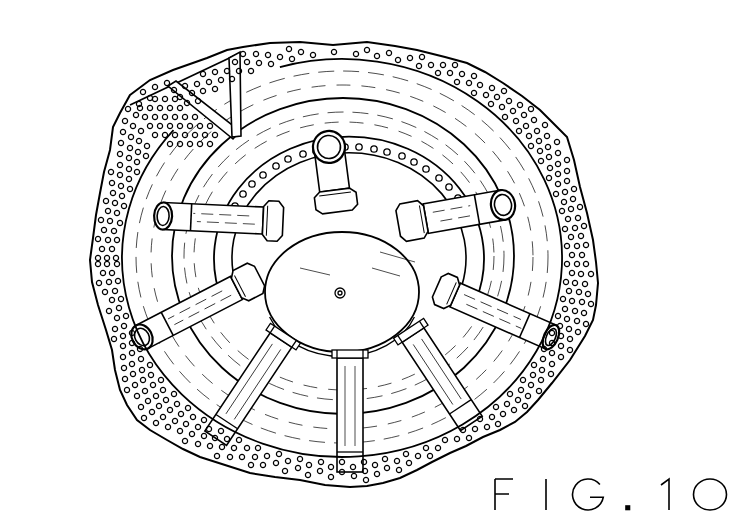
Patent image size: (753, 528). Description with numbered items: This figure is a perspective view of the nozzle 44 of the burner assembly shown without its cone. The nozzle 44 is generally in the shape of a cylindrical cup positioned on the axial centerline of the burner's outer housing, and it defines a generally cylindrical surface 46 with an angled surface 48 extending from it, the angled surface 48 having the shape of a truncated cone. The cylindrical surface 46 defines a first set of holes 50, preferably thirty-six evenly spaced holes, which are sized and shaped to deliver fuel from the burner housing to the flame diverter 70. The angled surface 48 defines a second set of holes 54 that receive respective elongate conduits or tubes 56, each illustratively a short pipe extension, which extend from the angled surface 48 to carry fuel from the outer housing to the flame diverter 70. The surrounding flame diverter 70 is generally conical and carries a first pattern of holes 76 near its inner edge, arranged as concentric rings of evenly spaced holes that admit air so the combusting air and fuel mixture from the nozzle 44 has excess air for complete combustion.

The nozzle 44 is at (233, 163).
The cylindrical surface 46 is at (384, 147).
The angled surface 48 is at (240, 257).
The first set of holes 50 is at (478, 93).
The second set of holes 54 is at (460, 260).
The elongate conduits or tubes 56 is at (503, 192).
The flame diverter 70 is at (530, 412).
The first pattern of holes 76 is at (128, 392).